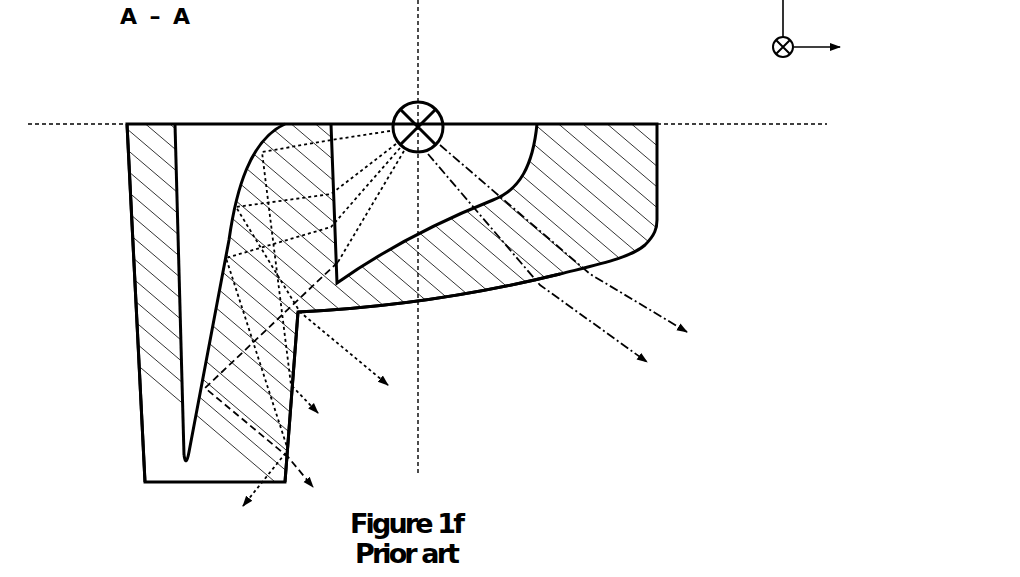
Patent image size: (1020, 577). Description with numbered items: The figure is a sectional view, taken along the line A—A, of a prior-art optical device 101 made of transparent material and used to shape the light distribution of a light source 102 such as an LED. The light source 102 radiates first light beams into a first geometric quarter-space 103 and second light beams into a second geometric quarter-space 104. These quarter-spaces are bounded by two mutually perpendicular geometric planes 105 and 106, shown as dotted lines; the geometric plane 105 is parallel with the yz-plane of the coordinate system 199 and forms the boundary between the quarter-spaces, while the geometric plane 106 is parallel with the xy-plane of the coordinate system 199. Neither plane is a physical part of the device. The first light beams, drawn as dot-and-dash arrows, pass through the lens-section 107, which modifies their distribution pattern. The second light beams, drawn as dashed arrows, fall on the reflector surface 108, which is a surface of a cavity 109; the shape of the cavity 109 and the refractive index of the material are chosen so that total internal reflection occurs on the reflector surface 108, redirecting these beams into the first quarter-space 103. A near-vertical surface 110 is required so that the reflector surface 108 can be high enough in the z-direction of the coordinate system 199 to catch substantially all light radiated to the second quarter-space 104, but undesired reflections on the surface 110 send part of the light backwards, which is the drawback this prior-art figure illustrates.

The optical device 101 is at (168, 305).
The light source 102 is at (441, 116).
The first geometric quarter-space 103 is at (709, 284).
The second geometric quarter-space 104 is at (395, 431).
The geometric plane 105 is at (418, 312).
The geometric plane 106 is at (772, 127).
The lens-section 107 is at (617, 215).
The reflector surface 108 is at (248, 175).
The cavity 109 is at (205, 225).
The near-vertical surface 110 is at (291, 450).
The coordinate system 199 is at (838, 23).